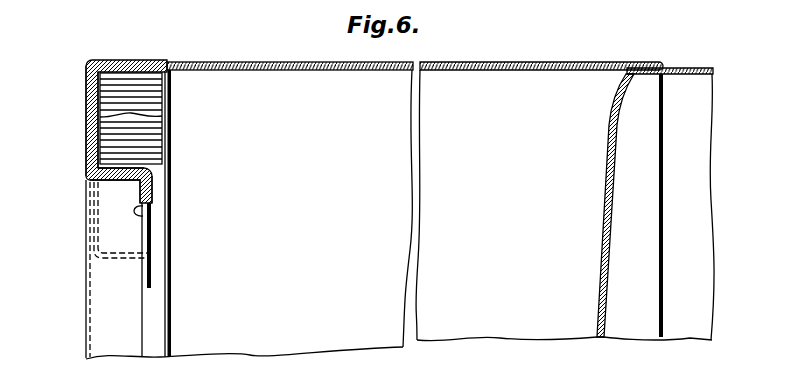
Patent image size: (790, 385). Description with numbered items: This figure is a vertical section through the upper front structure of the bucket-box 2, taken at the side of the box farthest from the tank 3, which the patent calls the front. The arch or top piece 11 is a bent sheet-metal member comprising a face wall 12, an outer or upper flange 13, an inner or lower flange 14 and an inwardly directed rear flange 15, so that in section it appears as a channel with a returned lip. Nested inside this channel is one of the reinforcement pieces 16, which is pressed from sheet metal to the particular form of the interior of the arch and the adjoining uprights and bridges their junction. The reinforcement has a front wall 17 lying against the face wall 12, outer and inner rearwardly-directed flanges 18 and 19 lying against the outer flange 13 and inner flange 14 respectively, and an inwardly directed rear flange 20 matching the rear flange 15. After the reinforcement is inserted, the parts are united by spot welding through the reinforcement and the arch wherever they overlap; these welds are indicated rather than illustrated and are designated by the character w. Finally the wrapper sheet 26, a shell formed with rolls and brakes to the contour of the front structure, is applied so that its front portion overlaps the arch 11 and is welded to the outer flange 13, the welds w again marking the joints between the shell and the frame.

The bucket-box 2 is at (693, 63).
The tank 3 is at (514, 57).
The wrapper sheet 26 is at (272, 62).
The outer or upper flange 13 is at (101, 61).
The arch or top piece 11 is at (85, 116).
The face wall 12 is at (91, 152).
The inner or lower flange 14 is at (108, 181).
The inwardly directed rear flange 15 is at (143, 217).
The reinforcement piece 16 is at (152, 172).
The front wall 17 is at (160, 118).
The outer rearwardly-directed flange 18 is at (140, 78).
The inner rearwardly-directed flange 19 is at (125, 167).
The inwardly directed rear flange of reinforcement 20 is at (151, 190).
The weld w is at (135, 59).